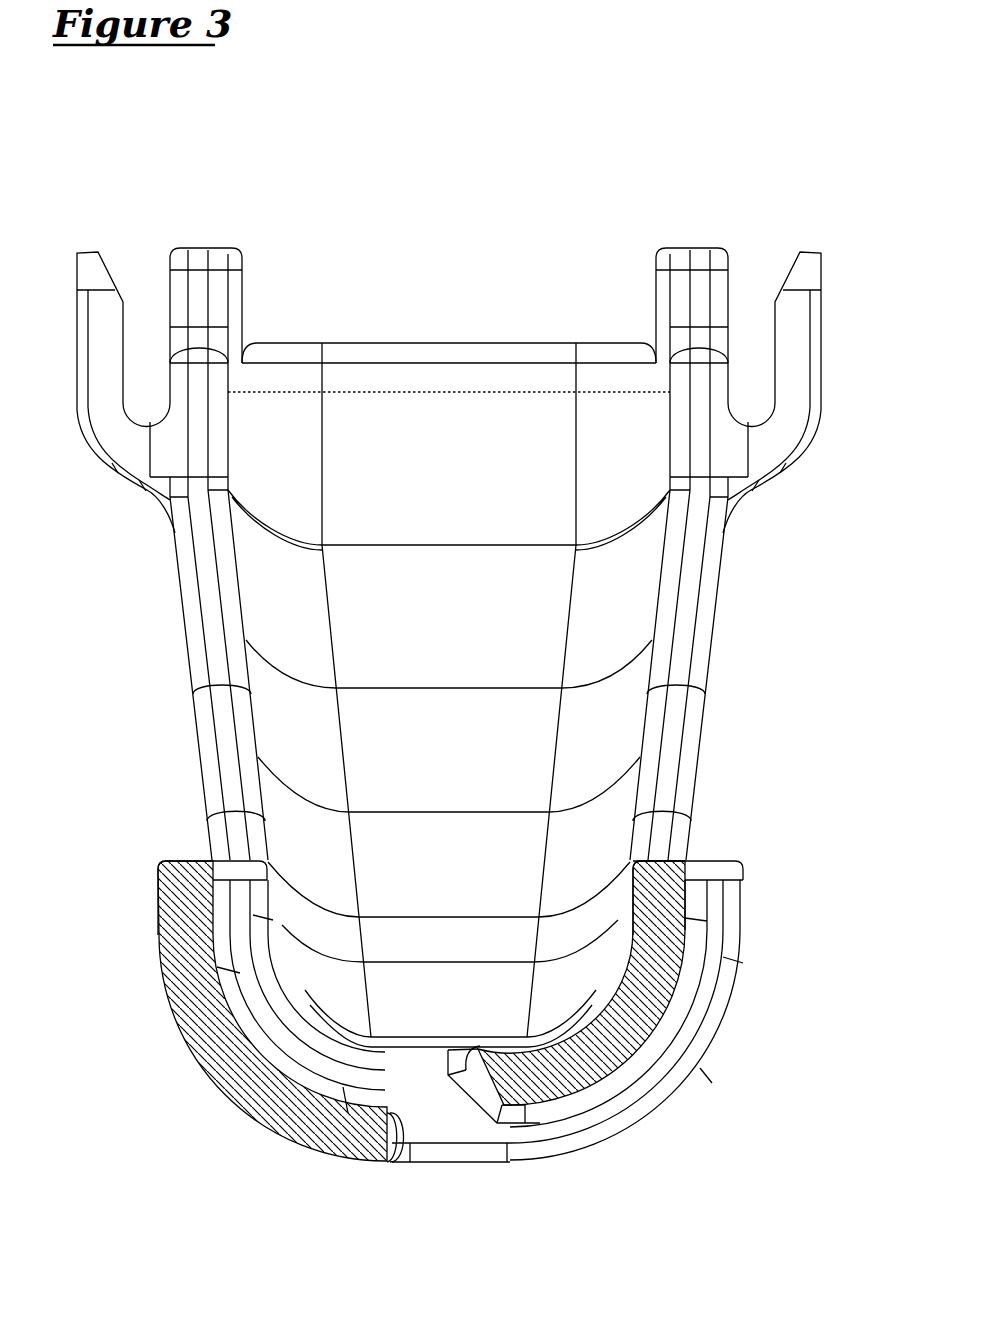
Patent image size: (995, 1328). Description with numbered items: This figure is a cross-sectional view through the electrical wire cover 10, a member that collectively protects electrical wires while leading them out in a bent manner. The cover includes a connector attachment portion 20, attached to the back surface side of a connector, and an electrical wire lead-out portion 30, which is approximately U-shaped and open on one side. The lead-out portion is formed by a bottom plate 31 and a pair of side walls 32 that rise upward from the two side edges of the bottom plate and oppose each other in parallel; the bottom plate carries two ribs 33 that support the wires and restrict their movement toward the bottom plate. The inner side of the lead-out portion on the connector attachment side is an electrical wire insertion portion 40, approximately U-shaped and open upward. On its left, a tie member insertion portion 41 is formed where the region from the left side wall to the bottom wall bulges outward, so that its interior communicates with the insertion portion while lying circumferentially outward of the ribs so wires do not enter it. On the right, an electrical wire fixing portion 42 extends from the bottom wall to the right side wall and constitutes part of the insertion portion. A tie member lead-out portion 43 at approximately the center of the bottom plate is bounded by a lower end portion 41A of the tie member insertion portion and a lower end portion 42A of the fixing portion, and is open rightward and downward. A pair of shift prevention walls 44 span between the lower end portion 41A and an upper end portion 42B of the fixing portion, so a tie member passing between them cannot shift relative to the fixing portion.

The electrical wire cover 10 is at (434, 186).
The connector attachment portion 20 is at (473, 332).
The electrical wire lead-out portion 30 is at (747, 757).
The bottom plate 31 is at (513, 1048).
The side walls 32 is at (165, 932).
The ribs 33 is at (427, 1040).
The electrical wire insertion portion 40 is at (453, 936).
The tie member insertion portion 41 is at (218, 1047).
The lower end portion of the tie member insertion portion 41A is at (368, 1137).
The electrical wire fixing portion 42 is at (655, 1007).
The lower end portion of the electrical wire fixing portion 42A is at (483, 1080).
The upper end portion of the electrical wire fixing portion 42B is at (657, 862).
The tie member lead-out portion 43 is at (440, 1120).
The shift prevention walls 44 is at (653, 1070).